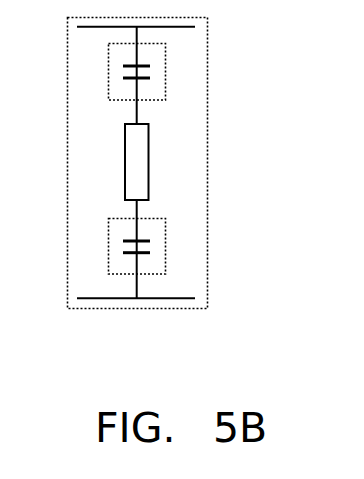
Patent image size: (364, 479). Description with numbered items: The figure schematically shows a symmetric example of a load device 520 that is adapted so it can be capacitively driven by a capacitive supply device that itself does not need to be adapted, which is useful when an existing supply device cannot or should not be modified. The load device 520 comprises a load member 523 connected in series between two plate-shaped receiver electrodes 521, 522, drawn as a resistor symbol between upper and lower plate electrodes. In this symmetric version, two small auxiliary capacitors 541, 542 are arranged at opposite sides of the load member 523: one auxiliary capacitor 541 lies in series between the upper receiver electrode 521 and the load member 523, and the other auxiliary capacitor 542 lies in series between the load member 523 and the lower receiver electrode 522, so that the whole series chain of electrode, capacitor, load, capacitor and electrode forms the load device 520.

The load device 520 is at (208, 133).
The plate-shaped receiver electrode 521 is at (163, 27).
The plate-shaped receiver electrode 522 is at (160, 298).
The load member 523 is at (148, 180).
The auxiliary capacitor 541 is at (108, 78).
The auxiliary capacitor 542 is at (108, 254).